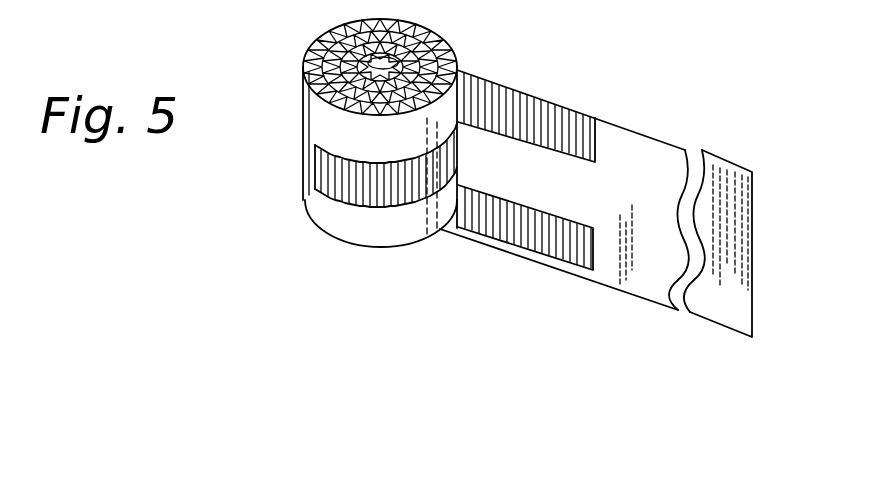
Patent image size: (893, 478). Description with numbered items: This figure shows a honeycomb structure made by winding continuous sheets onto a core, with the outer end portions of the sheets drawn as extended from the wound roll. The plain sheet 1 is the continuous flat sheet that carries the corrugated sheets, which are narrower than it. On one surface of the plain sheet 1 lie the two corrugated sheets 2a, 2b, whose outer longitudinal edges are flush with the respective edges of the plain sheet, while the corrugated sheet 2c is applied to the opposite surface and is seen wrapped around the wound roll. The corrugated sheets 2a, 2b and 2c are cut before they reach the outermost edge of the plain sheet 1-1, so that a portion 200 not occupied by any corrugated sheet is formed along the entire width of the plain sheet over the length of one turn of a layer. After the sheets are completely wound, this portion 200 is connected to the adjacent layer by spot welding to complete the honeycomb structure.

The plain sheet 1 is at (662, 278).
The outermost edge of the plain sheet 1-1 is at (752, 307).
The portion not occupied by the corrugated sheet 200 is at (665, 206).
The corrugated sheet 2a is at (573, 270).
The corrugated sheet 2b is at (588, 117).
The corrugated sheet 2c is at (302, 150).